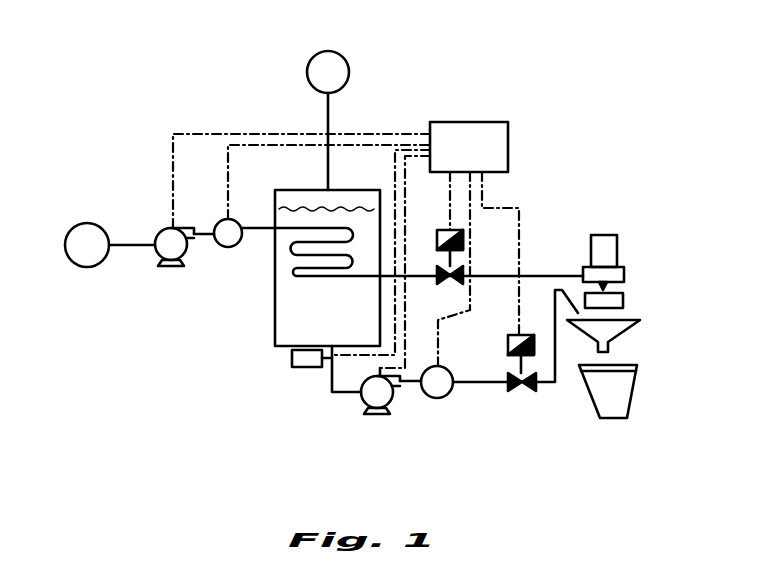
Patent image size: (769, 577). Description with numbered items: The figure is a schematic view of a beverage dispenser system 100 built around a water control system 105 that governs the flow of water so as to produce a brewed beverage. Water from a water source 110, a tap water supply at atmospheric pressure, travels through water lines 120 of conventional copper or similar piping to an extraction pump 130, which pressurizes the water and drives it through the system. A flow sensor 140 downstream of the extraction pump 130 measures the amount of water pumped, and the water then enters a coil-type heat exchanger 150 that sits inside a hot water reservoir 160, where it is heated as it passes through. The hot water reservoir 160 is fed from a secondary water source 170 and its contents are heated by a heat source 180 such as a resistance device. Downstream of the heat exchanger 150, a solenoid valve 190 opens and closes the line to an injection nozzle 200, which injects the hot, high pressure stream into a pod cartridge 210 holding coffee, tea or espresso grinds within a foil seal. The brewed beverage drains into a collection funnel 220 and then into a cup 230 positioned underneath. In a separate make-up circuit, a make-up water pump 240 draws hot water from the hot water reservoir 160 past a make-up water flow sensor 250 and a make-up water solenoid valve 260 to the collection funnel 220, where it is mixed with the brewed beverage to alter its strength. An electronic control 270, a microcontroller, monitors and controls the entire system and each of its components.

The beverage dispenser system 100 is at (135, 100).
The water control system 105 is at (170, 172).
The water source 110 is at (70, 235).
The water lines 120 is at (128, 244).
The extraction pump 130 is at (156, 258).
The flow sensor 140 is at (217, 246).
The heat exchanger 150 is at (288, 279).
The hot water reservoir 160 is at (275, 347).
The secondary water source 170 is at (345, 58).
The heat source 180 is at (290, 366).
The solenoid valve 190 is at (465, 231).
The injection nozzle 200 is at (618, 247).
The pod cartridge 210 is at (626, 298).
The collection funnel 220 is at (643, 320).
The cup 230 is at (634, 400).
The make-up water pump 240 is at (361, 405).
The make-up water flow sensor 250 is at (443, 400).
The make-up water solenoid valve 260 is at (513, 392).
The electronic control 270 is at (493, 115).